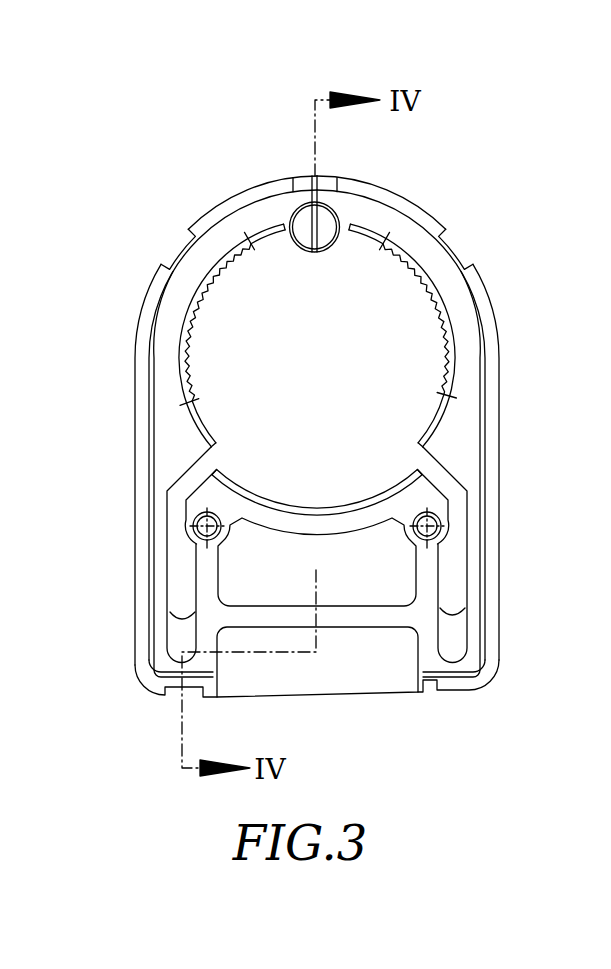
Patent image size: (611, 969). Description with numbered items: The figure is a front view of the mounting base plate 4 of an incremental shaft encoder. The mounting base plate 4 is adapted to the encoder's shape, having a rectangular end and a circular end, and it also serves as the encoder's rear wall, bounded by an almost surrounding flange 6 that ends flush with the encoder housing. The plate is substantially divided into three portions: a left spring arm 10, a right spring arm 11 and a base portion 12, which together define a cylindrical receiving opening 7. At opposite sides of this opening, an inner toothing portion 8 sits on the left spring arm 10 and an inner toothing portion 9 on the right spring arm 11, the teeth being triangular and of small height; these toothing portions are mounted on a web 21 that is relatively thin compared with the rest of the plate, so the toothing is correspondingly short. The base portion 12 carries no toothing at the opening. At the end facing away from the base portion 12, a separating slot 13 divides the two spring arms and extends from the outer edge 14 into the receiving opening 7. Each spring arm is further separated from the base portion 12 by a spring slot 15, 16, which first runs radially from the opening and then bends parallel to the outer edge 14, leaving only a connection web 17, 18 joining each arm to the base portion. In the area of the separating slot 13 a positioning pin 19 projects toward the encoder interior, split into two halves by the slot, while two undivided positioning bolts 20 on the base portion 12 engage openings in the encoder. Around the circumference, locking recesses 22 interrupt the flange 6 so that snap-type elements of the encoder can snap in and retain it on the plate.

The mounting base plate 4 is at (310, 455).
The flange 6 is at (398, 205).
The receiving opening 7 is at (440, 222).
The inner toothing portion 8 is at (210, 300).
The inner toothing portion 9 is at (420, 302).
The left spring arm 10 is at (140, 362).
The right spring arm 11 is at (458, 305).
The base portion 12 is at (352, 578).
The separating slot 13 is at (319, 172).
The outer edge 14 is at (228, 195).
The spring slot 15 is at (218, 460).
The spring slot 16 is at (410, 458).
The connection web 17 is at (174, 645).
The connection web 18 is at (448, 658).
The positioning pin 19 is at (312, 265).
The positioning bolts 20 is at (192, 528).
The web 21 is at (300, 505).
The locking recesses 22 is at (175, 252).